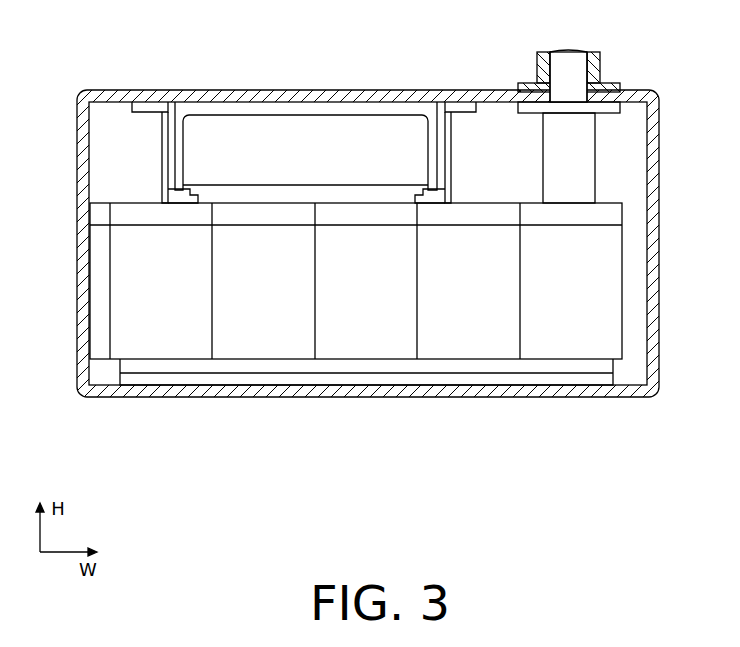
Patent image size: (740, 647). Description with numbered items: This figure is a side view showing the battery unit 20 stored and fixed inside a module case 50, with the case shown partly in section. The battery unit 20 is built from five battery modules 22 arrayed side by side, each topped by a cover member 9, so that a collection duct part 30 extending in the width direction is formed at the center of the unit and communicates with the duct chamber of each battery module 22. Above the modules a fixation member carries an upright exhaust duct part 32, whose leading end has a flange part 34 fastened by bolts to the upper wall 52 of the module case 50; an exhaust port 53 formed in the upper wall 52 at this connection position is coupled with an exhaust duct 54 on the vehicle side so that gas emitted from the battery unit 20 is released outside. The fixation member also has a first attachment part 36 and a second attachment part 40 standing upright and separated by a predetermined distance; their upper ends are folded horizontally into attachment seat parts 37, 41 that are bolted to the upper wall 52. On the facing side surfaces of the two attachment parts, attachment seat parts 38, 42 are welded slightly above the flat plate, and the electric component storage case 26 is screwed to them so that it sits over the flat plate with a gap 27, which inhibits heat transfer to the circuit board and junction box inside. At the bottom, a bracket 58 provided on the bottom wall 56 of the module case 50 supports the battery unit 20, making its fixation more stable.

The cover member 9 is at (82, 204).
The battery unit 20 is at (627, 283).
The battery module 22 is at (572, 315).
The electric component storage case 26 is at (284, 115).
The gap 27 is at (240, 193).
The collection duct part 30 is at (118, 222).
The exhaust duct part 32 is at (596, 178).
The flange part 34 is at (605, 113).
The first attachment part 36 is at (451, 146).
The attachment seat part 37 is at (457, 104).
The attachment seat part 38 is at (425, 192).
The second attachment part 40 is at (162, 153).
The attachment seat part 41 is at (150, 106).
The attachment seat part 42 is at (170, 193).
The module case 50 is at (112, 87).
The upper wall 52 is at (357, 90).
The exhaust port 53 is at (566, 98).
The exhaust duct 54 is at (537, 62).
The bottom wall 56 is at (353, 398).
The bracket 58 is at (433, 375).